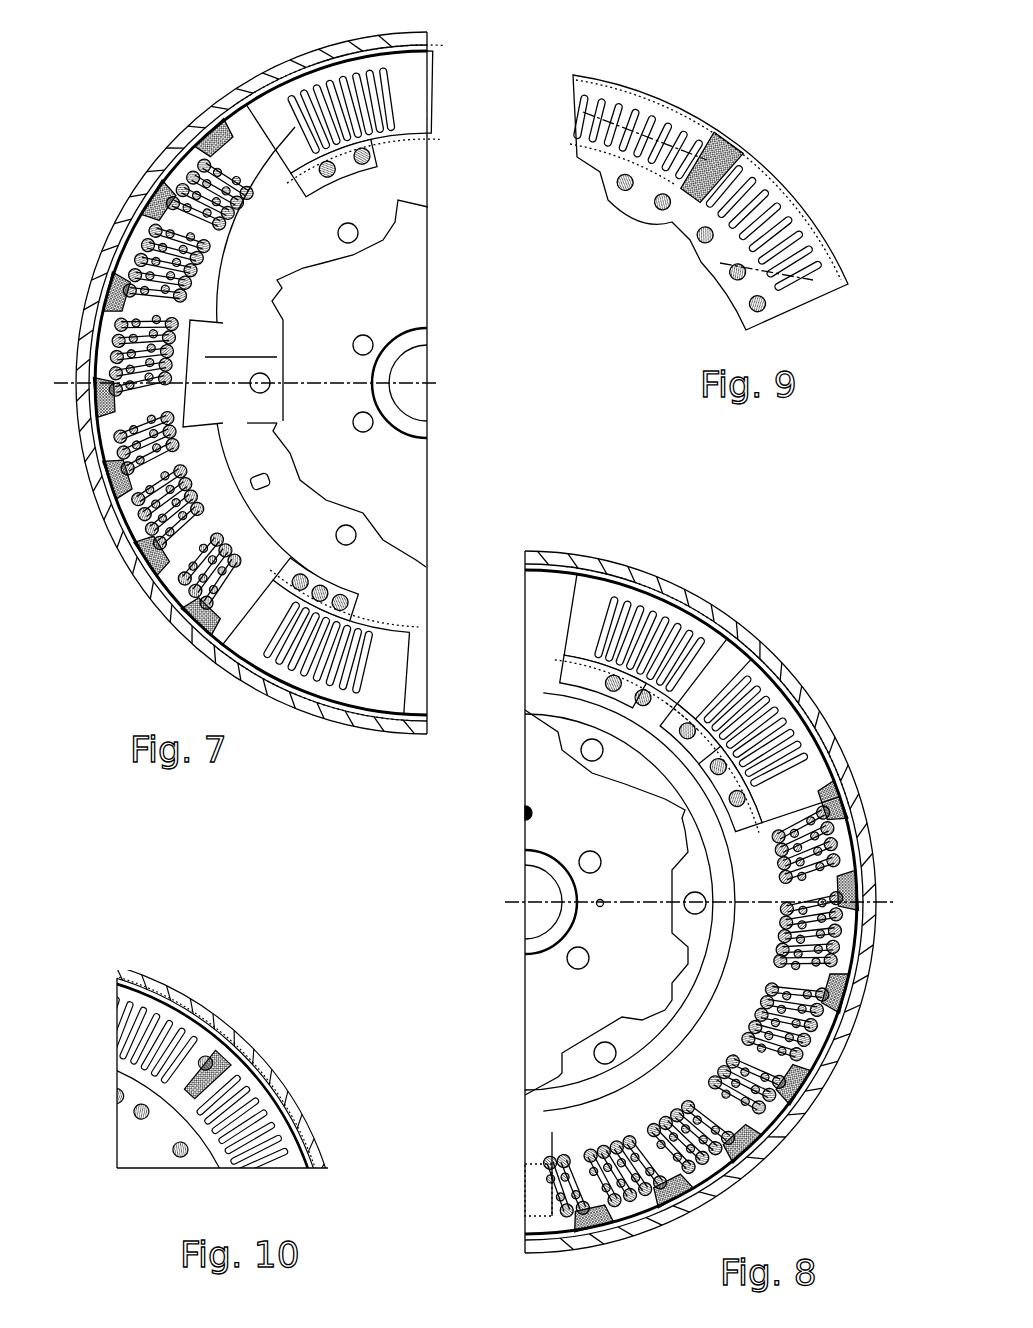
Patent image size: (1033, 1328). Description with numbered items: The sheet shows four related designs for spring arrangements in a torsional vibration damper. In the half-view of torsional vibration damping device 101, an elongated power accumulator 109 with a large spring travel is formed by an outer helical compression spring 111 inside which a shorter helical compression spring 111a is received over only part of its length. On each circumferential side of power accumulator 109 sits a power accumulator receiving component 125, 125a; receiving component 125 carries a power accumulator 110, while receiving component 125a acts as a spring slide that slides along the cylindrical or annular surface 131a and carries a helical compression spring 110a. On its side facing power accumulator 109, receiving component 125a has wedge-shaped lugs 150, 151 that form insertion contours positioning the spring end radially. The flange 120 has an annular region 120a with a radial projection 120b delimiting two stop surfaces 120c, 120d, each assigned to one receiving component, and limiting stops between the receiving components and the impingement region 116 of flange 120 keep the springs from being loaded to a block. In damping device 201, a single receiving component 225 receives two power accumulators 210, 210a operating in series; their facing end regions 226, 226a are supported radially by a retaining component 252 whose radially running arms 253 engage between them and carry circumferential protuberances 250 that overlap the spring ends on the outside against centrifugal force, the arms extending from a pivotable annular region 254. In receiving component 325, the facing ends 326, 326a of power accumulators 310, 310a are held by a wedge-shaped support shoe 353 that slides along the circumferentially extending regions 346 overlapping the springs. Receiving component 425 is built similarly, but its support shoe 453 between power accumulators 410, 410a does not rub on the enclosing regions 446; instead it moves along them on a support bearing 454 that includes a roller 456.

In FIG. 7, the torsional vibration damping device 101 is at (444, 50).
In FIG. 7, the elongated power accumulator 109 is at (185, 165).
In FIG. 7, the power accumulator 110 is at (320, 677).
In FIG. 7, the power accumulator 110a is at (347, 87).
In FIG. 7, the helical compression spring 111 is at (160, 613).
In FIG. 7, the helical compression spring 111a is at (155, 485).
In FIG. 7, the impingement region 116 is at (417, 100).
In FIG. 7, the flange 120 is at (388, 193).
In FIG. 7, the annular region 120a is at (272, 427).
In FIG. 7, the radial projection 120b is at (283, 355).
In FIG. 7, the stop surface 120c is at (123, 483).
In FIG. 7, the stop surface 120d is at (132, 250).
In FIG. 7, the power accumulator receiving component 125 is at (353, 703).
In FIG. 7, the power accumulator receiving component 125a is at (307, 57).
In FIG. 7, the cylindrical or annular surface 131a is at (135, 220).
In FIG. 7, the lug 150 is at (247, 100).
In FIG. 7, the lug 151 is at (247, 133).
In FIG. 8, the damping device 201 is at (607, 545).
In FIG. 8, the power accumulator 210 is at (632, 612).
In FIG. 8, the power accumulator 210a is at (798, 703).
In FIG. 8, the power accumulator receiving component 225 is at (813, 777).
In FIG. 8, the end region 226 is at (700, 650).
In FIG. 8, the end region 226a is at (787, 657).
In FIG. 8, the protuberance 250 is at (697, 677).
In FIG. 8, the retaining component 252 is at (672, 717).
In FIG. 8, the arm 253 is at (763, 657).
In FIG. 8, the annular region 254 is at (588, 1092).
In FIG. 9, the power accumulator 310 is at (731, 205).
In FIG. 9, the power accumulator 310a is at (764, 227).
In FIG. 9, the power accumulator receiving component 325 is at (710, 202).
In FIG. 9, the end 326 is at (638, 137).
In FIG. 9, the end 326a is at (692, 243).
In FIG. 9, the region 346 is at (705, 180).
In FIG. 9, the support shoe 353 is at (709, 169).
In FIG. 10, the power accumulator 410 is at (141, 1038).
In FIG. 10, the power accumulator 410a is at (242, 1125).
In FIG. 10, the power accumulator receiving component 425 is at (207, 1083).
In FIG. 10, the region 446 is at (205, 1109).
In FIG. 10, the support shoe 453 is at (196, 1077).
In FIG. 10, the support bearing 454 is at (206, 1075).
In FIG. 10, the roller 456 is at (206, 1063).